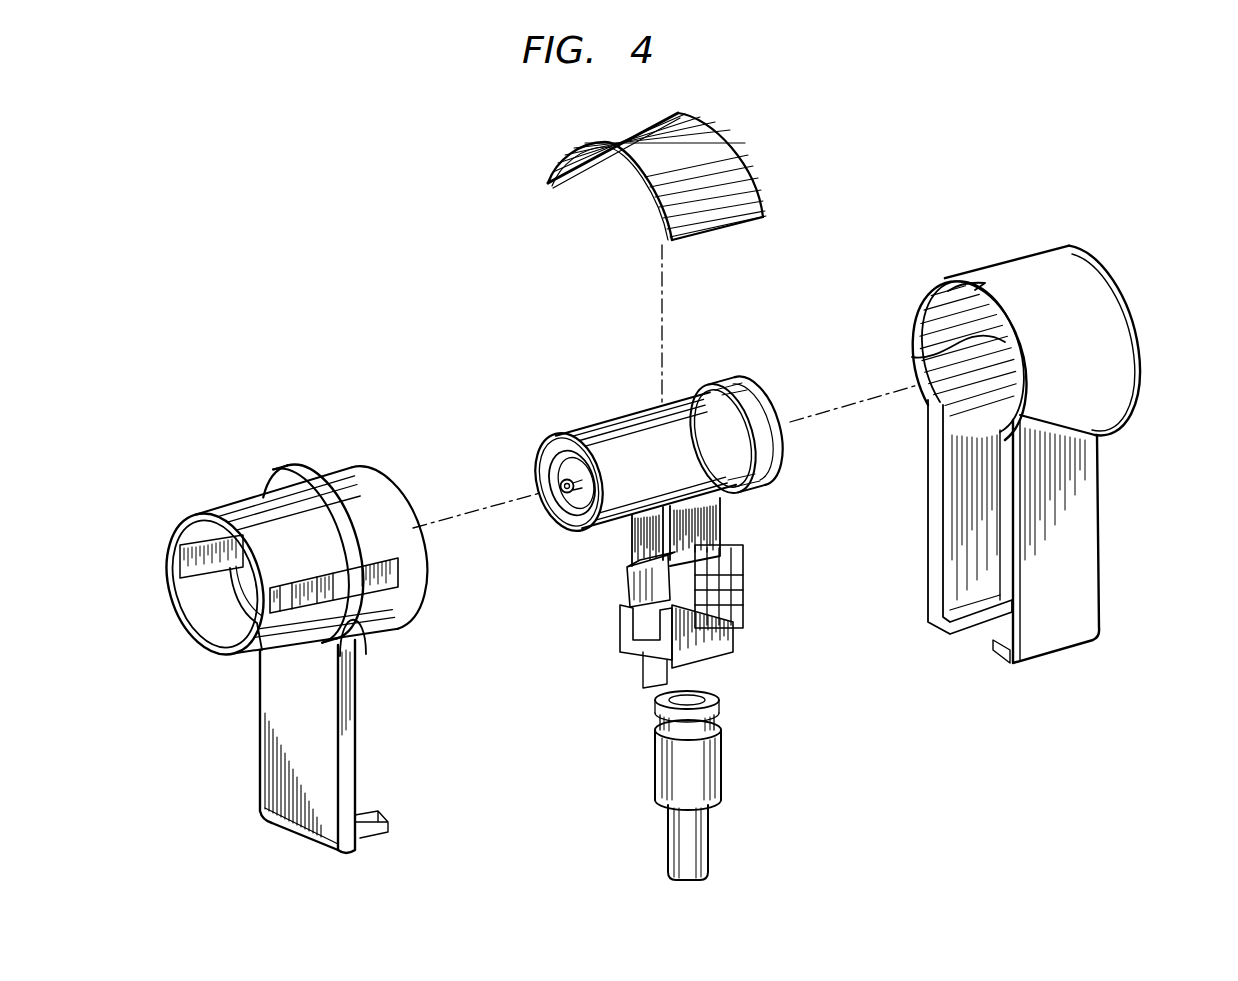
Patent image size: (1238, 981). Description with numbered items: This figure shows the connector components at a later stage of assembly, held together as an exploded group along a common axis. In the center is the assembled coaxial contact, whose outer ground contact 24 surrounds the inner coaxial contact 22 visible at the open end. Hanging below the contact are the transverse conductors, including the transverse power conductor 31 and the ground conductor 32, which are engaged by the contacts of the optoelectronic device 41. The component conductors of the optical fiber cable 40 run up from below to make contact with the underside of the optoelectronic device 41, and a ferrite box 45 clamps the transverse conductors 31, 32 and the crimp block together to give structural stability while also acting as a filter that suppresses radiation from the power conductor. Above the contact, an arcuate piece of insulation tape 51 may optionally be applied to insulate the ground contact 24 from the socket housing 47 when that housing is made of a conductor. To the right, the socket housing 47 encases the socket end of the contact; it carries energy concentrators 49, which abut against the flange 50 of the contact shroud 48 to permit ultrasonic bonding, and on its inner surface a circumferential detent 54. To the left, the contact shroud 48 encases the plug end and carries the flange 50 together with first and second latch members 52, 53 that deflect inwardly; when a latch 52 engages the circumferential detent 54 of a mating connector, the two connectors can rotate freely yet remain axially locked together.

The coaxial contact 22 is at (563, 508).
The ground contact 24 is at (548, 448).
The transverse power conductor 31 is at (722, 530).
The ground conductor 32 is at (635, 540).
The optical fiber cable 40 is at (668, 836).
The optoelectronic device 41 is at (628, 584).
The ferrite box 45 is at (620, 627).
The socket housing 47 is at (1135, 331).
The contact shroud 48 is at (327, 462).
The energy concentrators 49 is at (968, 284).
The flange 50 is at (280, 483).
The insulation tape 51 is at (742, 150).
The first latch member 52 is at (265, 660).
The second latch member 53 is at (346, 660).
The circumferential detent 54 is at (912, 357).